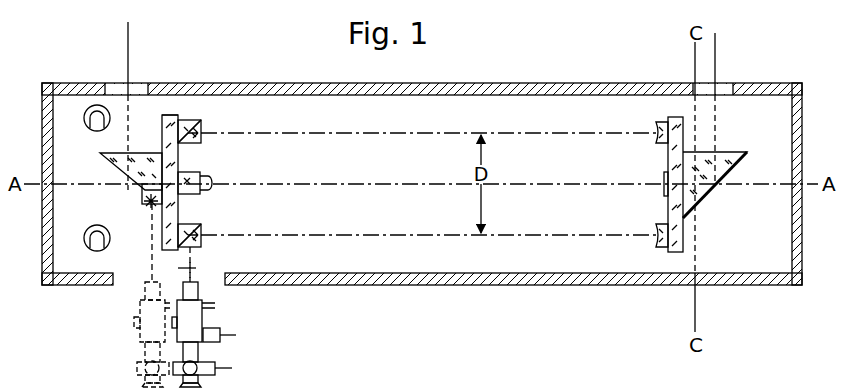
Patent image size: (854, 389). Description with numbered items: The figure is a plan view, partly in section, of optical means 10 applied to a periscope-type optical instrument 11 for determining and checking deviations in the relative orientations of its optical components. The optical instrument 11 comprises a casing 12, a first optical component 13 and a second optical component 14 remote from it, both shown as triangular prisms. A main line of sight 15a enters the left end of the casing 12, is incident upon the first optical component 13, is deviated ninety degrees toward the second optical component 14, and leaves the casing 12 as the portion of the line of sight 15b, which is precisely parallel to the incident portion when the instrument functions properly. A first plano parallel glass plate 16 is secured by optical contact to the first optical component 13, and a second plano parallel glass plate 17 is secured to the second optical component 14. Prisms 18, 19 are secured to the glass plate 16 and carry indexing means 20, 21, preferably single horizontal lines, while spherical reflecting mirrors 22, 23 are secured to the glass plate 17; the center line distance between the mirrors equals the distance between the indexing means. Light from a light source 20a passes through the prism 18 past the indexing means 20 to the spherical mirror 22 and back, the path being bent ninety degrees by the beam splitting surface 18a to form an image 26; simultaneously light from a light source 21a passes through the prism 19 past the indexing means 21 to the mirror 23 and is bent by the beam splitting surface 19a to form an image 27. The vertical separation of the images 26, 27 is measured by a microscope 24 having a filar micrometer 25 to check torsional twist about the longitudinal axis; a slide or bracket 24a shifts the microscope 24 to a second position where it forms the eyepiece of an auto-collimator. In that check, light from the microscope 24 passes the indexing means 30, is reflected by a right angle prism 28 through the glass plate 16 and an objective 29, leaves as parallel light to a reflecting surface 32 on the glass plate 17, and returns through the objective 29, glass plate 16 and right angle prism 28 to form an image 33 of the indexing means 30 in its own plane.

The optical means 10 is at (169, 113).
The optical instrument 11 is at (490, 284).
The casing 12 is at (357, 285).
The first optical component 13 is at (100, 158).
The second optical component 14 is at (722, 172).
The main line of sight 15a is at (126, 44).
The line of sight portion 15b is at (716, 58).
The first plano parallel glass plate 16 is at (162, 123).
The second plano parallel glass plate 17 is at (670, 125).
The prism 18 is at (205, 245).
The beam splitting surface 18a is at (203, 229).
The prism 19 is at (190, 122).
The beam splitting surface 19a is at (204, 128).
The indexing means 20 is at (202, 235).
The light source 20a is at (84, 240).
The indexing means 21 is at (201, 133).
The light source 21a is at (98, 105).
The spherical reflecting mirror 22 is at (656, 240).
The spherical reflecting mirror 23 is at (656, 133).
The microscope 24 is at (205, 312).
The slide or bracket 24a is at (138, 303).
The filar micrometer 25 is at (232, 368).
The image 26 is at (195, 268).
The image 27 is at (194, 270).
The right angle prism 28 is at (142, 190).
The objective 29 is at (212, 183).
The indexing means 30 is at (149, 203).
The reflecting surface 32 is at (664, 183).
The image 33 is at (150, 206).